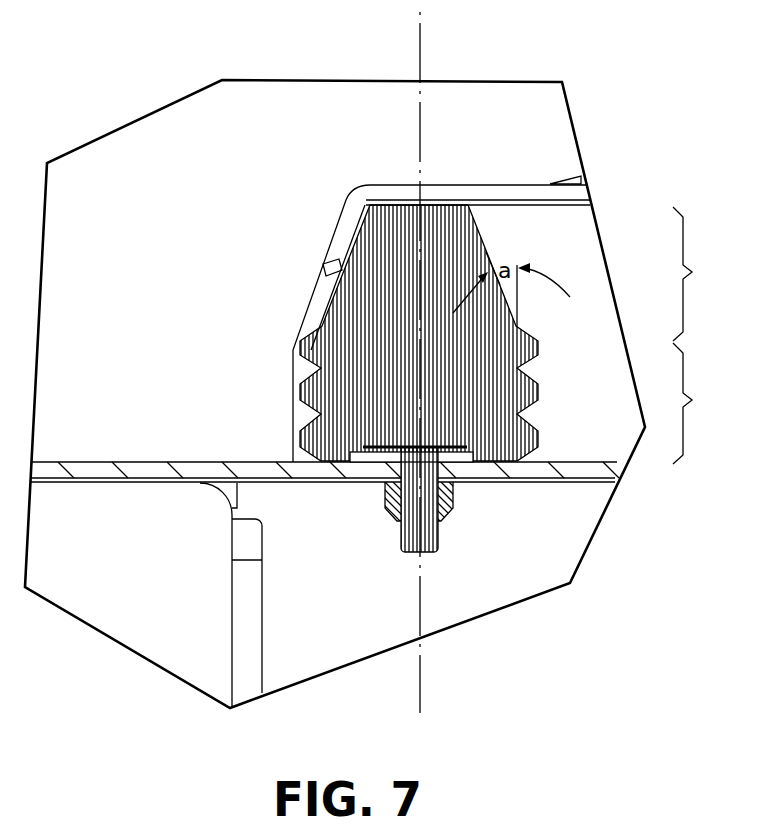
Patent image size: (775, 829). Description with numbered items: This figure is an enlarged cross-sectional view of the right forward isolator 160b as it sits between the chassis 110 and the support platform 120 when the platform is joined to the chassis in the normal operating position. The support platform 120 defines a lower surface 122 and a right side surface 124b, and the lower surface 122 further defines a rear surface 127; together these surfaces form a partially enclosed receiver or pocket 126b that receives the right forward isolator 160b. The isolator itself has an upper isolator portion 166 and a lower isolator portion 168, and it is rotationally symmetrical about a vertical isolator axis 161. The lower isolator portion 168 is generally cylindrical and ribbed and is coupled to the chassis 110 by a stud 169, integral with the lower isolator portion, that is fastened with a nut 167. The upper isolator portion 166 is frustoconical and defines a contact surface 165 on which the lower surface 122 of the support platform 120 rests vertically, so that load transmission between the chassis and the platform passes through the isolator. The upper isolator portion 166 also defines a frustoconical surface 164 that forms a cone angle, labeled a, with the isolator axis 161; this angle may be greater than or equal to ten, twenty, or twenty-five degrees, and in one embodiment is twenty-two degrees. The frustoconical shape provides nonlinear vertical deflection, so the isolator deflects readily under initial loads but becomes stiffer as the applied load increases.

The chassis 110 is at (318, 483).
The support platform 120 is at (378, 178).
The lower surface 122 is at (500, 205).
The right side surface 124b is at (360, 247).
The right receiver 126b is at (360, 200).
The rear surface 127 is at (563, 220).
The right forward isolator 160b is at (332, 296).
The vertical isolator axis 161 is at (422, 683).
The frustoconical surface 164 is at (486, 252).
The contact surface 165 is at (422, 204).
The upper isolator portion 166 is at (700, 274).
The nut 167 is at (452, 500).
The lower isolator portion 168 is at (700, 403).
The stud 169 is at (425, 551).